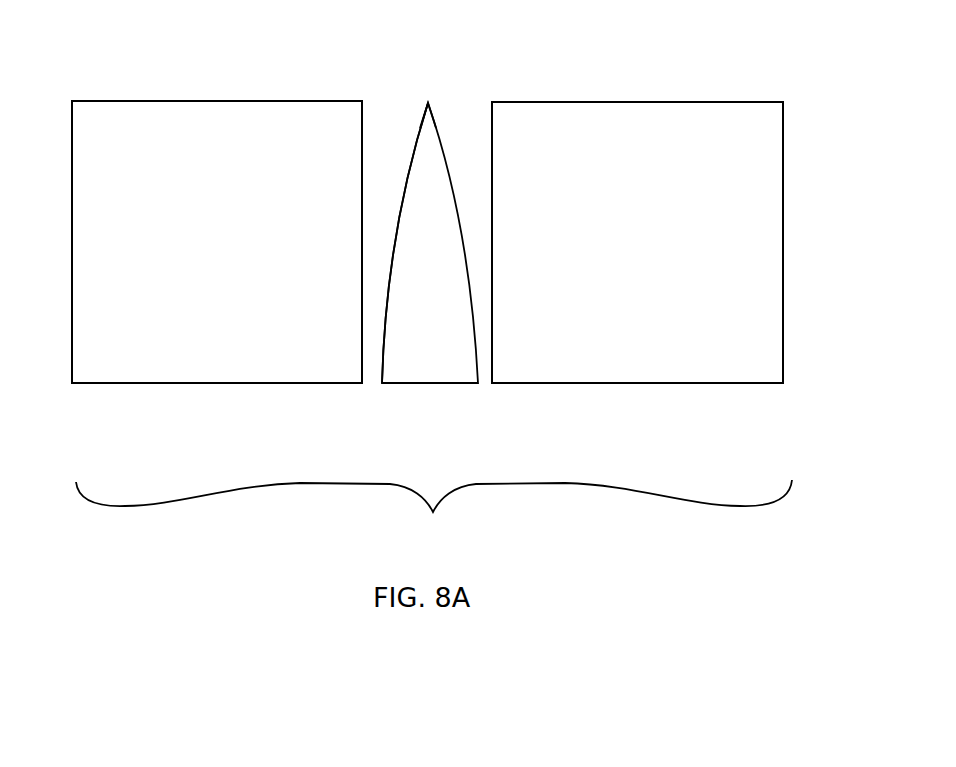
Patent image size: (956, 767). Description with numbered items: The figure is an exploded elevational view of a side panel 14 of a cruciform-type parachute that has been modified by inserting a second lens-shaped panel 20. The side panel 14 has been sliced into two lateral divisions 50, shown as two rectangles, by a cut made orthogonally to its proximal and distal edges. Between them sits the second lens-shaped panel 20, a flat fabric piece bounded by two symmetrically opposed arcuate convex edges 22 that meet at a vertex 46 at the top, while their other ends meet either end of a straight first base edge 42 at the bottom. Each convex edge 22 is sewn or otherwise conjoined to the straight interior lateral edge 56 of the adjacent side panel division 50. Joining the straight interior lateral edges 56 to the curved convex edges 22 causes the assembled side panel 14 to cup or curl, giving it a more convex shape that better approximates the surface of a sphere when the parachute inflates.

The side panel 14 is at (434, 516).
The second lens-shaped panel 20 is at (422, 287).
The convex edge 22 is at (406, 152).
The first base edge 42 is at (428, 384).
The vertex 46 is at (427, 102).
The lateral division 50 is at (219, 313).
The interior lateral edge 56 is at (491, 158).